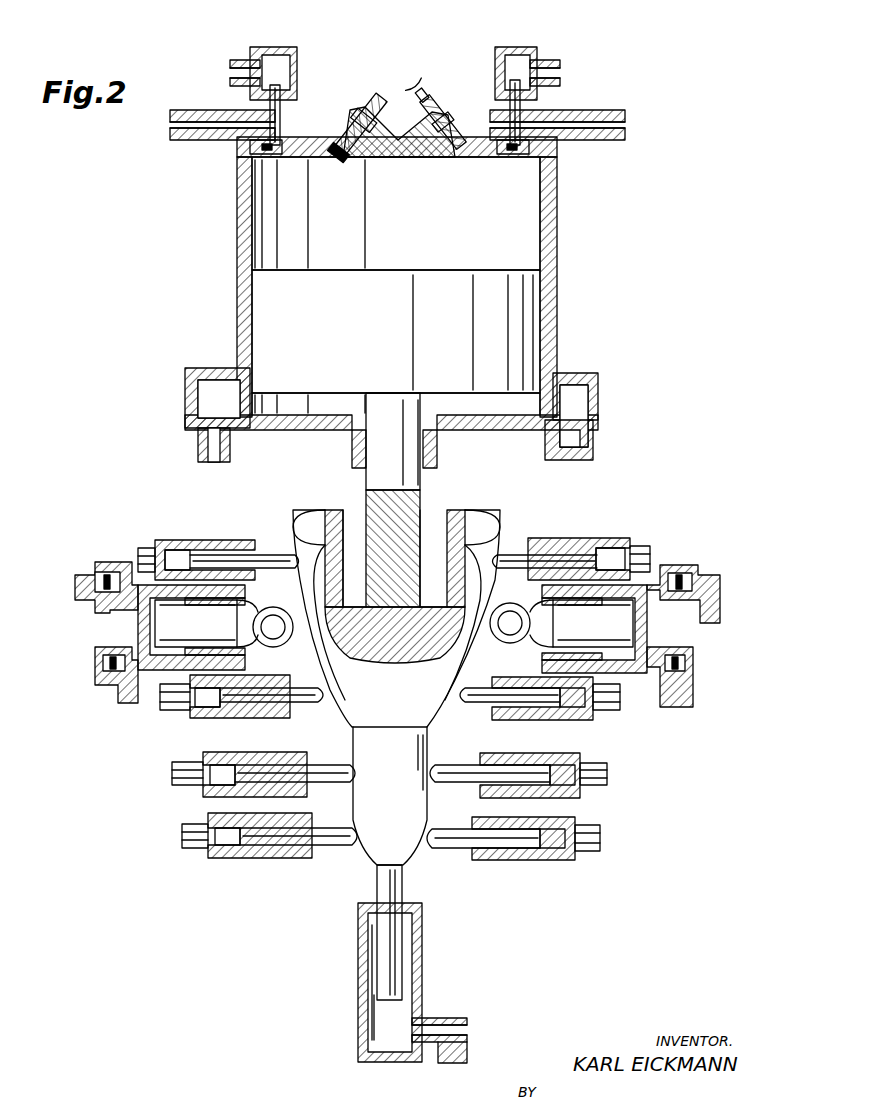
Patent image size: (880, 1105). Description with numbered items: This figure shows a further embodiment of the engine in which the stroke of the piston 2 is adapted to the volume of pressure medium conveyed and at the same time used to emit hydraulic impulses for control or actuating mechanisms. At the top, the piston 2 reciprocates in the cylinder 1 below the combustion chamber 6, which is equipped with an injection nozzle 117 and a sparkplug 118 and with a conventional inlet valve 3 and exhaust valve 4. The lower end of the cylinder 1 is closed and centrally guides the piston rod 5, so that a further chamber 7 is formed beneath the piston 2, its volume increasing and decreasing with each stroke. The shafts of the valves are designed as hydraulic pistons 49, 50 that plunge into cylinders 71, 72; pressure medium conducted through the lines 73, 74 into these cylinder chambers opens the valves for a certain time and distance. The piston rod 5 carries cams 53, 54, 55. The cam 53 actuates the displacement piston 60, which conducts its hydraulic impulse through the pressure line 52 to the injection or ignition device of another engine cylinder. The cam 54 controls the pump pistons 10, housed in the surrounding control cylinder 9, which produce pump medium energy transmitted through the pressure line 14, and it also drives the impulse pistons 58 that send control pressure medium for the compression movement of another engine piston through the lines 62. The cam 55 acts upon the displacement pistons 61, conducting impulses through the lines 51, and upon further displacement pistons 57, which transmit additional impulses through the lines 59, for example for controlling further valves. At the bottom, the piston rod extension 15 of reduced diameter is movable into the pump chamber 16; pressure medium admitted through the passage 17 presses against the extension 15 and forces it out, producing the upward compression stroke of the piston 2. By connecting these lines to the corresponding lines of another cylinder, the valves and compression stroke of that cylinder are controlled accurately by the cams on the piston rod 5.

The cylinder 1 is at (545, 248).
The piston 2 is at (460, 318).
The inlet valve 3 is at (275, 152).
The exhaust valve 4 is at (523, 152).
The piston rod 5 is at (368, 478).
The combustion chamber 6 is at (472, 222).
The further chamber 7 is at (472, 404).
The control cylinder 9 is at (618, 660).
The pump piston 10 is at (578, 616).
The pressure line 14 is at (80, 572).
The piston rod extension 15 is at (378, 884).
The pump chamber 16 is at (405, 968).
The passage 17 is at (455, 1030).
The hydraulic piston 49 is at (512, 88).
The hydraulic piston 50 is at (280, 92).
The line 51 is at (570, 782).
The pressure line 52 is at (148, 540).
The cam 53 is at (480, 522).
The cam 54 is at (350, 688).
The control cam 55 is at (380, 803).
The displacement piston 57 is at (450, 832).
The impulse piston 58 is at (476, 690).
The line 59 is at (178, 705).
The displacement piston 60 is at (272, 556).
The displacement piston 61 is at (458, 768).
The line 62 is at (575, 710).
The cylinder 71 is at (270, 55).
The cylinder 72 is at (520, 55).
The line 73 is at (205, 124).
The line 74 is at (600, 125).
The injection nozzle 117 is at (355, 103).
The sparkplug 118 is at (452, 108).